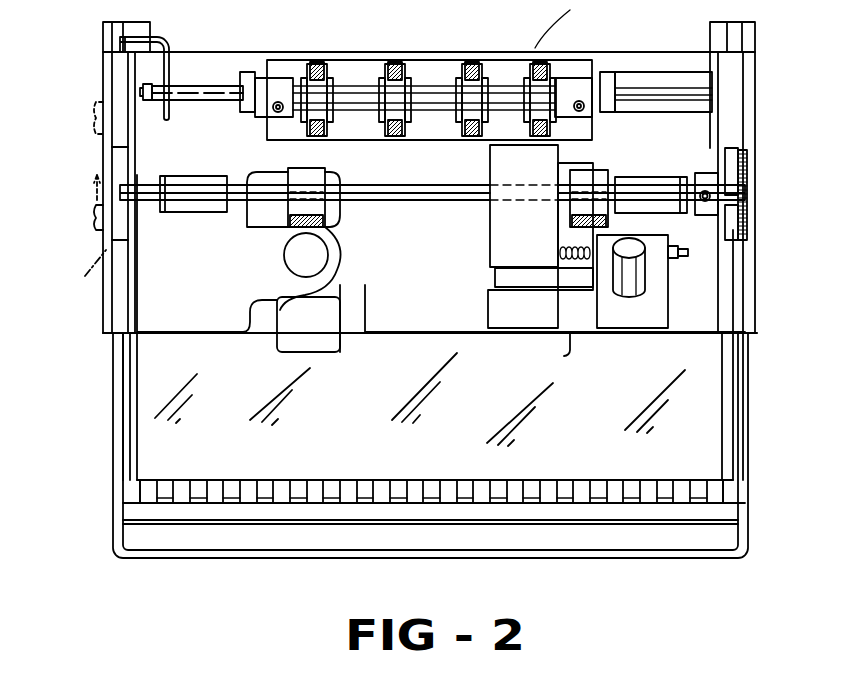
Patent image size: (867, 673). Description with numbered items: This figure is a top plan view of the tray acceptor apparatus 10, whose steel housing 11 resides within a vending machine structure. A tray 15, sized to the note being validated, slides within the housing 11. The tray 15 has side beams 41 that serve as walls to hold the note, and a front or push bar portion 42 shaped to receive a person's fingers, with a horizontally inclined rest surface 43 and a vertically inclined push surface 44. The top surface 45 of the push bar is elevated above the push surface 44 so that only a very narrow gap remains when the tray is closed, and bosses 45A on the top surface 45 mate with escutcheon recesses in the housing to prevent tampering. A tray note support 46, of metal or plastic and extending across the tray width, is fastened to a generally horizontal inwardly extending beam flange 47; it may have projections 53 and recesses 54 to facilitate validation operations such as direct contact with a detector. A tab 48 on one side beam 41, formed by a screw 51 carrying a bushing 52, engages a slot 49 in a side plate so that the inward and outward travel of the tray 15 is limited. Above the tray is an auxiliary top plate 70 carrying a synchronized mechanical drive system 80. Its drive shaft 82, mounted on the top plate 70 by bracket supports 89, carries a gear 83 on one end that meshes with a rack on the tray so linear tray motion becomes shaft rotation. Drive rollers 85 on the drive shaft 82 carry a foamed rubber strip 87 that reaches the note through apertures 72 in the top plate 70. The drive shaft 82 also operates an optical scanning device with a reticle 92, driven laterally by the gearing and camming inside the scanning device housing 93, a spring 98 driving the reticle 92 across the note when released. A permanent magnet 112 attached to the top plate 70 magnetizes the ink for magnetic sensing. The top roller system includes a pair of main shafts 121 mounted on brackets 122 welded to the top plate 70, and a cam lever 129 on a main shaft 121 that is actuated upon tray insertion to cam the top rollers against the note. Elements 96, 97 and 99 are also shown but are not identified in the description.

The tray acceptor apparatus 10 is at (543, 42).
The housing 11 is at (752, 90).
The tray 15 is at (763, 413).
The side beams 41 is at (118, 463).
The front or push bar portion 42 is at (113, 542).
The rest surface 43 is at (330, 548).
The push surface 44 is at (427, 522).
The top surface 45 is at (450, 486).
The bosses 45A is at (296, 485).
The tray note support 46 is at (697, 457).
The beam flange 47 is at (128, 437).
The tab 48 is at (93, 216).
The slot 49 is at (85, 276).
The screw 51 is at (94, 207).
The bushing 52 is at (95, 236).
The projections 53 is at (337, 289).
The recesses 54 is at (333, 335).
The top plate 70 is at (196, 310).
The apertures 72 is at (328, 172).
The synchronized mechanical drive system 80 is at (483, 177).
The drive shaft 82 is at (433, 190).
The gear 83 is at (747, 189).
The drive rollers 85 is at (318, 175).
The foamed rubber strip 87 is at (327, 213).
The bracket supports 89 is at (180, 212).
The reticle 92 is at (645, 270).
The scanning device housing 93 is at (498, 219).
The link bar 96 is at (504, 276).
The motor housing 97 is at (626, 331).
The spring 98 is at (561, 251).
The adjustment knob 99 is at (674, 244).
The permanent magnet 112 is at (290, 253).
The main shafts 121 is at (680, 86).
The brackets 122 is at (636, 74).
The cam lever 129 is at (166, 40).